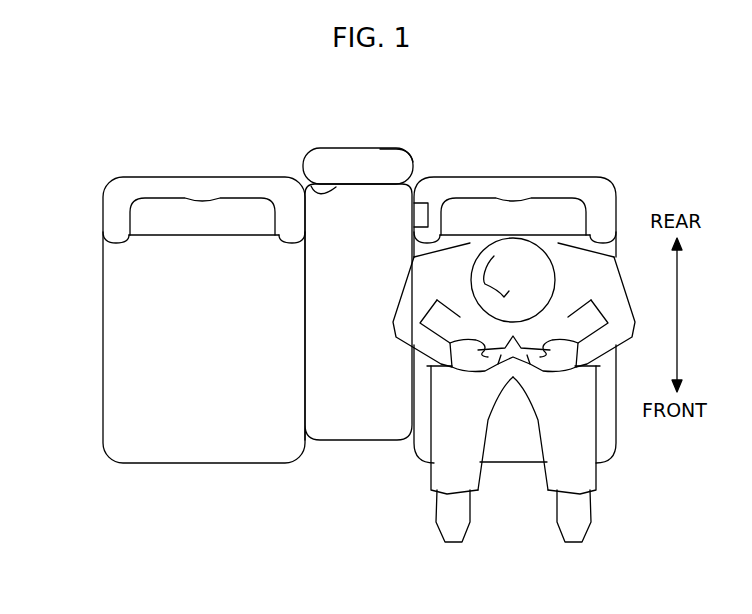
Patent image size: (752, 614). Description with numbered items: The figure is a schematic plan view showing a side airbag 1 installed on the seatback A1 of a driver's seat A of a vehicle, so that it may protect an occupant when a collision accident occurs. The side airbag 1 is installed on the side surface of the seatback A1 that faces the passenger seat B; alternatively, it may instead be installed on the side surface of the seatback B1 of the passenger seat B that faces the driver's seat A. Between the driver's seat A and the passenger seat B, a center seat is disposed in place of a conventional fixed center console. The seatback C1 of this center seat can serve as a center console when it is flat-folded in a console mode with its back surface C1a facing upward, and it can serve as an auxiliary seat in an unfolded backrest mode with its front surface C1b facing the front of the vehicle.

The driver's seat A is at (608, 440).
The seatback of the driver's seat A1 is at (566, 190).
The passenger seat B is at (125, 347).
The seatback of the passenger seat B1 is at (118, 207).
The seatback of the center seat C1 is at (358, 162).
The back surface C1a is at (391, 150).
The front surface C1b is at (308, 193).
The side airbag 1 is at (424, 200).